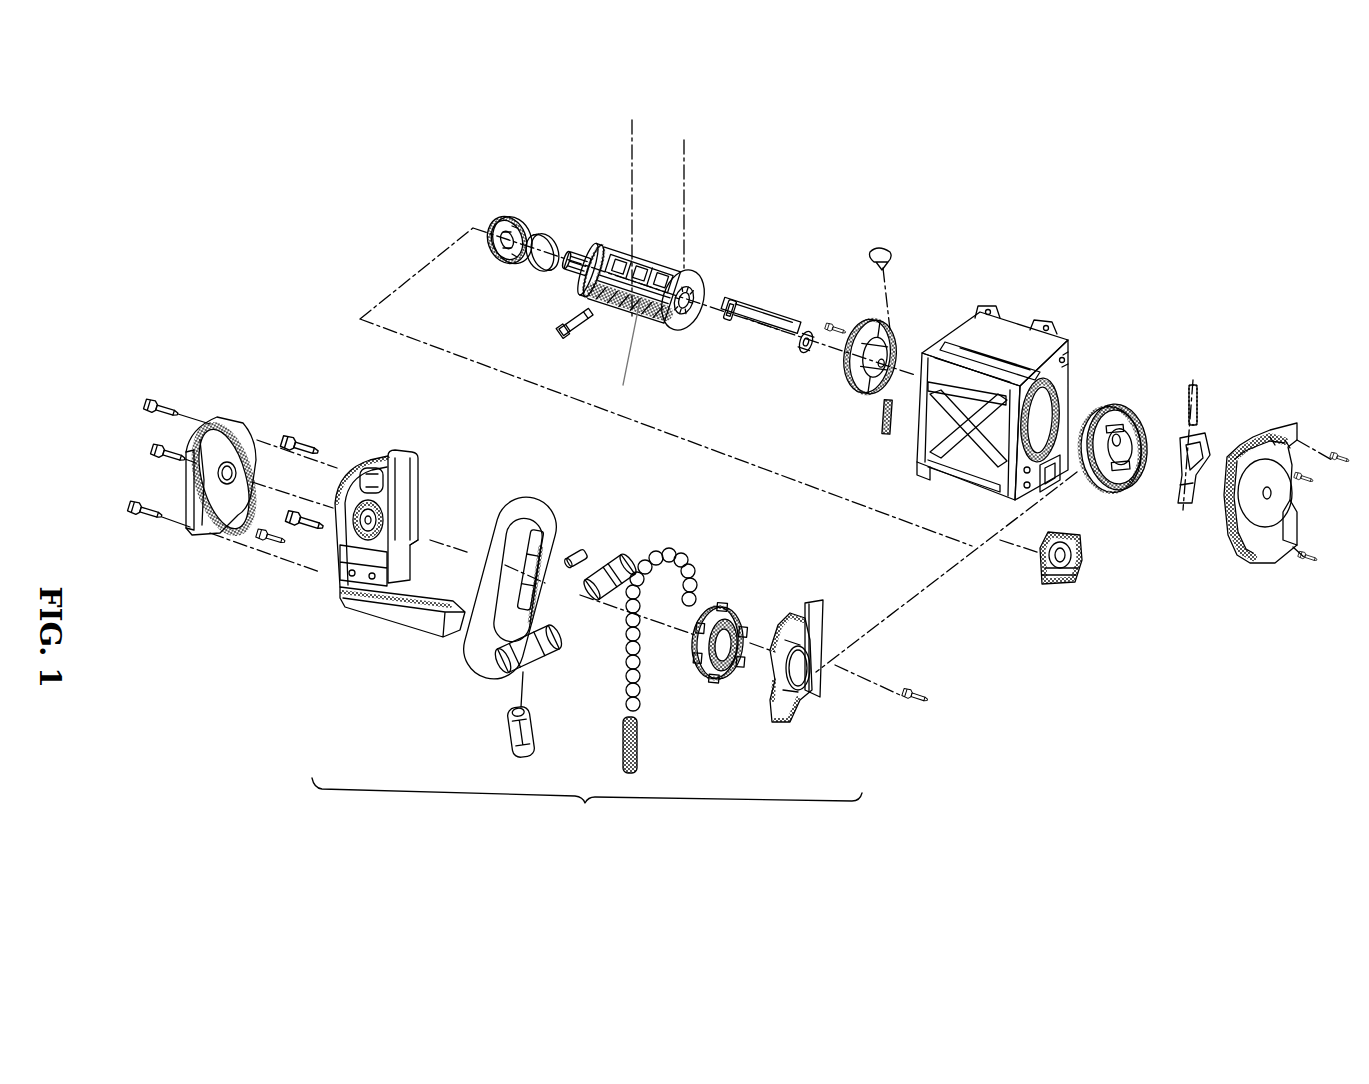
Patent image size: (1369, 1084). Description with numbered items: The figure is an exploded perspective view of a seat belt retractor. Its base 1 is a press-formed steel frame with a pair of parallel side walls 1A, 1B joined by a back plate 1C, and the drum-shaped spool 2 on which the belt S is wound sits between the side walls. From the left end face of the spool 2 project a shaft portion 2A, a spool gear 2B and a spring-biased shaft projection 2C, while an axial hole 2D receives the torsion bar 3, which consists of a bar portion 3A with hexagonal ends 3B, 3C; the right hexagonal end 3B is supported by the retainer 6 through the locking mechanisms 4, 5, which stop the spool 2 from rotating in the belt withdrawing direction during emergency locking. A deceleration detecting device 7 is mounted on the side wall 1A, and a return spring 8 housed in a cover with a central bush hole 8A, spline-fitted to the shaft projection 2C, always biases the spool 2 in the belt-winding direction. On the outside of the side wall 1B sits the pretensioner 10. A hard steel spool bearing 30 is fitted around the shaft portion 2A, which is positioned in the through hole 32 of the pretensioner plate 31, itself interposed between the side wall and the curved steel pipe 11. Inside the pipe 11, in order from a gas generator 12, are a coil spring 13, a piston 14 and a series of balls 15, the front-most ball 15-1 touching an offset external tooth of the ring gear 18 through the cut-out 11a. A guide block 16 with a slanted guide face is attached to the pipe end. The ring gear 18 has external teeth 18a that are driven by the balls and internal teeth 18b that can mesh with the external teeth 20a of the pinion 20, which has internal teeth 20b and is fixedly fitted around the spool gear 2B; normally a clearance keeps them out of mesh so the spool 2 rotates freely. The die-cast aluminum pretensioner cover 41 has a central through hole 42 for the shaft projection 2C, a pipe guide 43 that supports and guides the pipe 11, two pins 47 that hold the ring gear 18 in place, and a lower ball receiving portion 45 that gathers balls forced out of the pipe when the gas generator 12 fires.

The base 1 is at (1014, 323).
The side wall 1A is at (1068, 363).
The side wall 1B is at (988, 313).
The back plate 1C is at (1028, 343).
The spool 2 is at (657, 252).
The shaft portion 2A is at (585, 303).
The spool gear 2B is at (597, 263).
The spring-biased shaft projection 2C is at (590, 274).
The hole 2D is at (645, 351).
The torsion bar 3 is at (787, 320).
The bar portion 3A is at (757, 327).
The hexagonal end 3B is at (805, 352).
The hexagonal end 3C is at (730, 303).
The locking mechanism 4 is at (892, 323).
The locking mechanism 5 is at (1110, 492).
The retainer 6 is at (1253, 436).
The deceleration detecting device 7 is at (1055, 590).
The return spring 8 is at (230, 413).
The bush hole 8A is at (233, 465).
The pretensioner 10 is at (587, 805).
The pipe 11 is at (540, 498).
The cut-out 11a is at (545, 580).
The gas generator 12 is at (617, 553).
The coil spring 13 is at (623, 750).
The piston 14 is at (627, 703).
The balls 15 is at (633, 647).
The front-most ball 15-1 is at (690, 563).
The guide block 16 is at (538, 733).
The ring gear 18 is at (732, 667).
The external teeth 18a is at (727, 610).
The internal teeth 18b is at (738, 627).
The pinion 20 is at (497, 212).
The external teeth 20a is at (506, 224).
The internal teeth 20b is at (508, 262).
The spool bearing 30 is at (546, 236).
The pretensioner plate 31 is at (818, 597).
The through hole 32 is at (800, 687).
The pretensioner cover 41 is at (413, 448).
The through hole 42 is at (383, 512).
The pipe guide 43 is at (378, 463).
The ball receiving portion 45 is at (393, 593).
The pins 47 is at (350, 530).
The belt S is at (688, 165).